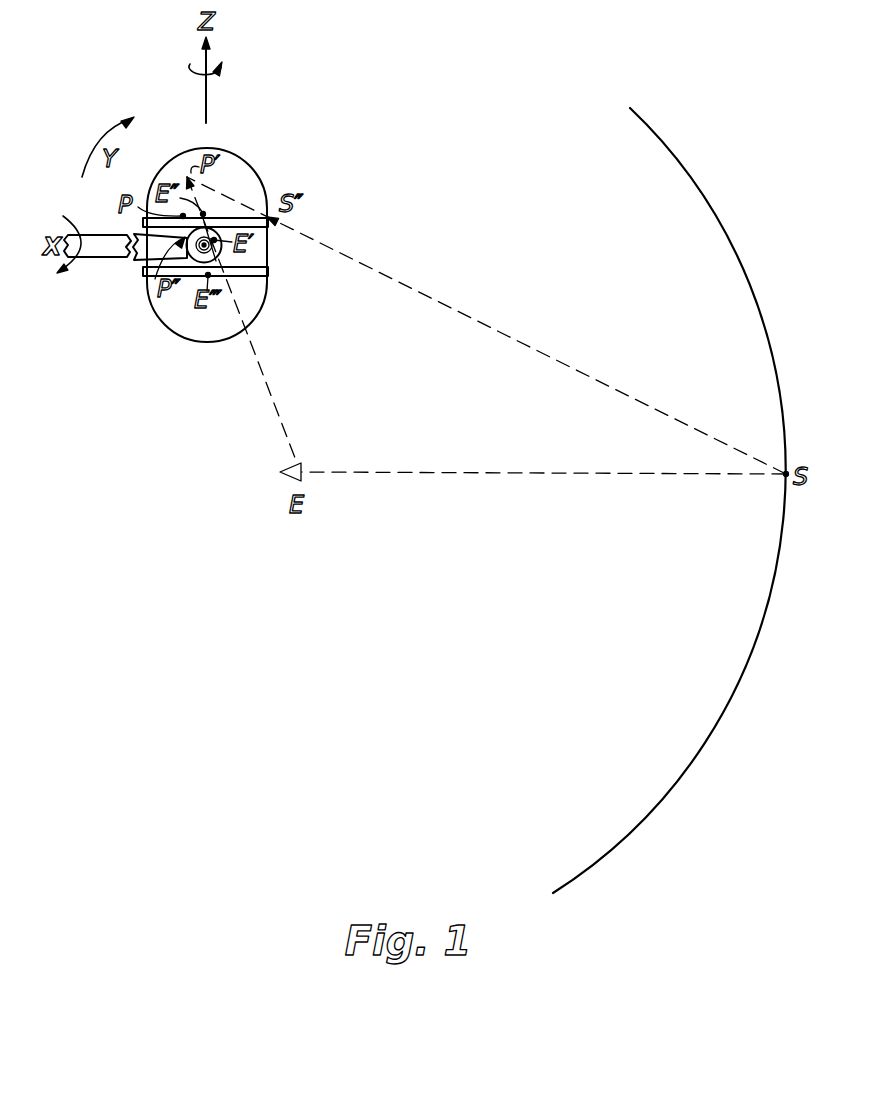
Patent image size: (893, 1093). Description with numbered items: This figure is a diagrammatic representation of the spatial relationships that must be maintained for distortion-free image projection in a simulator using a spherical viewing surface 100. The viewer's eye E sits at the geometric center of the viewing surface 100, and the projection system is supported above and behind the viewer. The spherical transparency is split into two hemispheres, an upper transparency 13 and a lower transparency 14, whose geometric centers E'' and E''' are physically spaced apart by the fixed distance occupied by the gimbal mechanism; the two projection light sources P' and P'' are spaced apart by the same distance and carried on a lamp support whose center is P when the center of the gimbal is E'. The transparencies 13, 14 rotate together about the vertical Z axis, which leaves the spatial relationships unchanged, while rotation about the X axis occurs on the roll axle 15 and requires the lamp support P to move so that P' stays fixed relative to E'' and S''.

The upper transparency 13 is at (257, 175).
The lower transparency 14 is at (253, 323).
The roll axle 15 is at (111, 258).
The viewing surface 100 is at (702, 197).